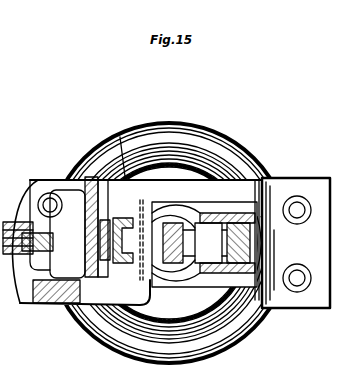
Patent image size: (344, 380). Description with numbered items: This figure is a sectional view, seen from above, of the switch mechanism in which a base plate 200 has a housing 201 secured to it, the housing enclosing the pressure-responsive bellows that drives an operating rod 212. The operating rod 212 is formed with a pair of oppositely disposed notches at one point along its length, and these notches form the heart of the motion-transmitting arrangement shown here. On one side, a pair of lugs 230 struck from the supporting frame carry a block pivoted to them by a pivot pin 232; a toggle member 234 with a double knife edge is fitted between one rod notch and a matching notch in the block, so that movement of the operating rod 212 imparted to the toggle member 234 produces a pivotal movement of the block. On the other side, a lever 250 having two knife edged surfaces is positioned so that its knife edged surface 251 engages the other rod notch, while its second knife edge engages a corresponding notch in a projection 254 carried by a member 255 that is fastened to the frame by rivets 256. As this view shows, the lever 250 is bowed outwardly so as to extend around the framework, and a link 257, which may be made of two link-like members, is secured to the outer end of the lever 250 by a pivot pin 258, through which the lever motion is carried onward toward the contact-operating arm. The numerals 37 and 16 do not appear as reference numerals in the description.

The base plate 200 is at (163, 303).
The housing 201 is at (172, 130).
The operating rod 212 is at (185, 218).
The lugs 230 is at (222, 200).
The pivot pin 232 is at (272, 178).
The toggle member 234 is at (215, 290).
The lever 250 is at (120, 137).
The knife edged surface 251 is at (160, 215).
The projection 254 is at (98, 178).
The member 255 is at (72, 179).
The rivets 256 is at (60, 178).
The link 257 is at (53, 240).
The pivot pin 258 is at (15, 218).
The housing base 37 is at (32, 302).
The support 16 is at (40, 319).